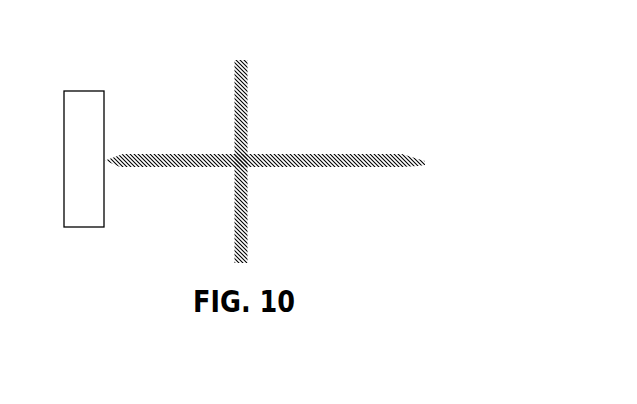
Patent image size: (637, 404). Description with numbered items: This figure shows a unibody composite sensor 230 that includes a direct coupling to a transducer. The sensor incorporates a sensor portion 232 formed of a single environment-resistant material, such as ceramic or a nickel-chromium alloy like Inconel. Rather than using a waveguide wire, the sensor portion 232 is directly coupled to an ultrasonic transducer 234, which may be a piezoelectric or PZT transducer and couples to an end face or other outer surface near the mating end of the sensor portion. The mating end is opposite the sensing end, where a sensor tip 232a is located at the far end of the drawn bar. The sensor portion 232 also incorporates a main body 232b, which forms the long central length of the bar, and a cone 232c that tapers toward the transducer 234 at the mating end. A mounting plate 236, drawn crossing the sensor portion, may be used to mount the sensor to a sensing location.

The composite sensor 230 is at (367, 72).
The sensor portion 232 is at (268, 152).
The sensor tip 232a is at (415, 155).
The main body 232b is at (340, 152).
The cone 232c is at (118, 163).
The ultrasonic transducer 234 is at (78, 228).
The mounting plate 236 is at (245, 55).